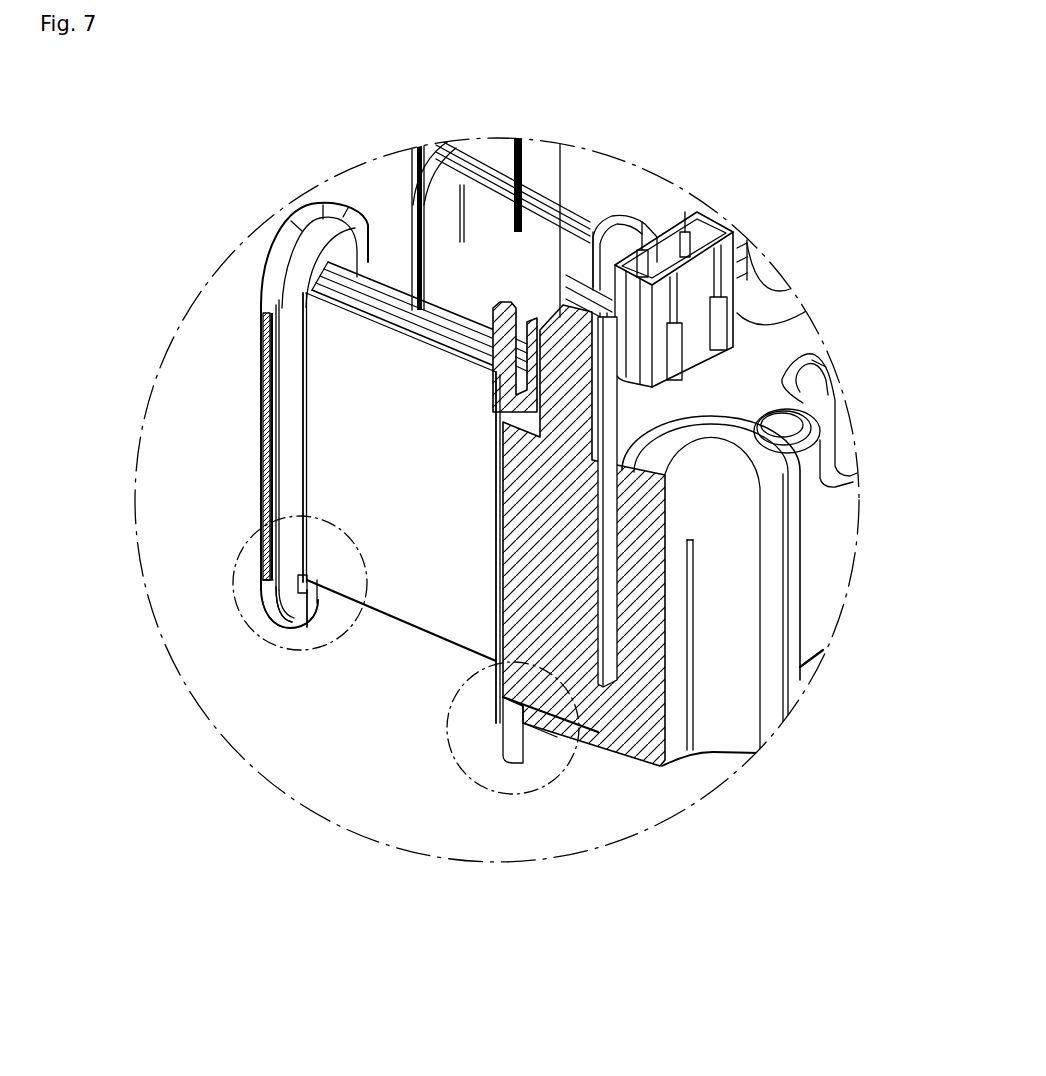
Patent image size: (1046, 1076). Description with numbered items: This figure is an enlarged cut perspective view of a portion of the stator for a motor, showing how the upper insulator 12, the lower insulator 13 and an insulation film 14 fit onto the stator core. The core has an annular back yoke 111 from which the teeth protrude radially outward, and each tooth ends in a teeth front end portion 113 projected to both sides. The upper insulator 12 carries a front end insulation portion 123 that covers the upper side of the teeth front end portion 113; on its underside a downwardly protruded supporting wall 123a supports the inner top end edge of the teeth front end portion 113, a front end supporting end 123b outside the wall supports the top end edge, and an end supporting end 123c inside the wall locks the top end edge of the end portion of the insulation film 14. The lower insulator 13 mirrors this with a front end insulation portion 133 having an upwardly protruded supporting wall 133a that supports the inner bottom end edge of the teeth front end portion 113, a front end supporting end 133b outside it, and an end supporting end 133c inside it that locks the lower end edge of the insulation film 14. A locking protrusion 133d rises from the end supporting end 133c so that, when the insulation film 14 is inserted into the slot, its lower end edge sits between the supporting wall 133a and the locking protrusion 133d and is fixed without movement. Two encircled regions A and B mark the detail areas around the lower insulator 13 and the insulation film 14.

The upper insulator 12 is at (672, 212).
The lower insulator 13 is at (583, 762).
The insulation film 14 is at (448, 650).
The back yoke 111 is at (539, 682).
The teeth front end portion 113 is at (246, 463).
The front end insulation portion 123 is at (304, 213).
The supporting wall 123a is at (262, 330).
The front end supporting end 123b is at (262, 322).
The end supporting end 123c is at (262, 363).
The front end insulation portion 133 is at (278, 630).
The supporting wall 133a is at (260, 591).
The front end supporting end 133b is at (263, 597).
The end supporting end 133c is at (308, 628).
The locking protrusion 133d is at (308, 585).
The detail region A is at (350, 537).
The detail region B is at (492, 790).